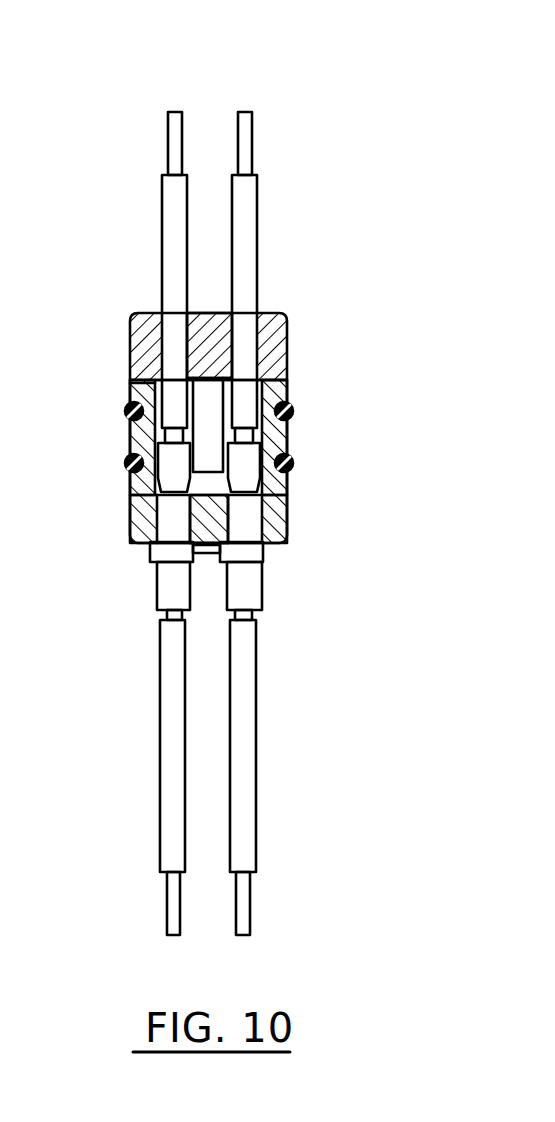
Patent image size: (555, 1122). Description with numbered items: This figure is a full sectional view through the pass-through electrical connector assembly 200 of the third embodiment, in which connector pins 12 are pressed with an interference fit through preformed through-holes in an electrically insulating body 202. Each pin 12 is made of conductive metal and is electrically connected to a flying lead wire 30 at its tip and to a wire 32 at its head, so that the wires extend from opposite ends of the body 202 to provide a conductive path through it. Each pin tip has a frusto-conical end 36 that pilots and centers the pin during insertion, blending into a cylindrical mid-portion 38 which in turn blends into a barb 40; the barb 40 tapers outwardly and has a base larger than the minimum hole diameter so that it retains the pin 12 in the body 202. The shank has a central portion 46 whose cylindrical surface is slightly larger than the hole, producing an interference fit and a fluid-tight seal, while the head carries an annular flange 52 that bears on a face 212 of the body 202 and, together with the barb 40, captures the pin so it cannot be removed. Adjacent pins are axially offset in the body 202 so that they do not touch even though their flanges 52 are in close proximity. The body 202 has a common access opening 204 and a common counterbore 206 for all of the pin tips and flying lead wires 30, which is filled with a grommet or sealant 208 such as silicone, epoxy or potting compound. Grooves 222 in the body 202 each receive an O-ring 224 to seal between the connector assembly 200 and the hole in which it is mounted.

The electrical connector assembly 200 is at (305, 124).
The electric wire 30 is at (175, 200).
The counterbore 206 is at (173, 307).
The grommet or sealant 208 is at (262, 312).
The groove 222 is at (270, 382).
The body 202 is at (128, 497).
The access opening 204 is at (160, 406).
The O-ring 224 is at (295, 412).
The face 212 is at (295, 458).
The frusto-conical end 36 is at (167, 440).
The barb 40 is at (167, 485).
The cylindrical mid-portion 38 is at (256, 468).
The central portion 46 is at (162, 532).
The annular flange 52 is at (158, 560).
The connector pin 12 is at (148, 593).
The electric wire 32 is at (175, 747).